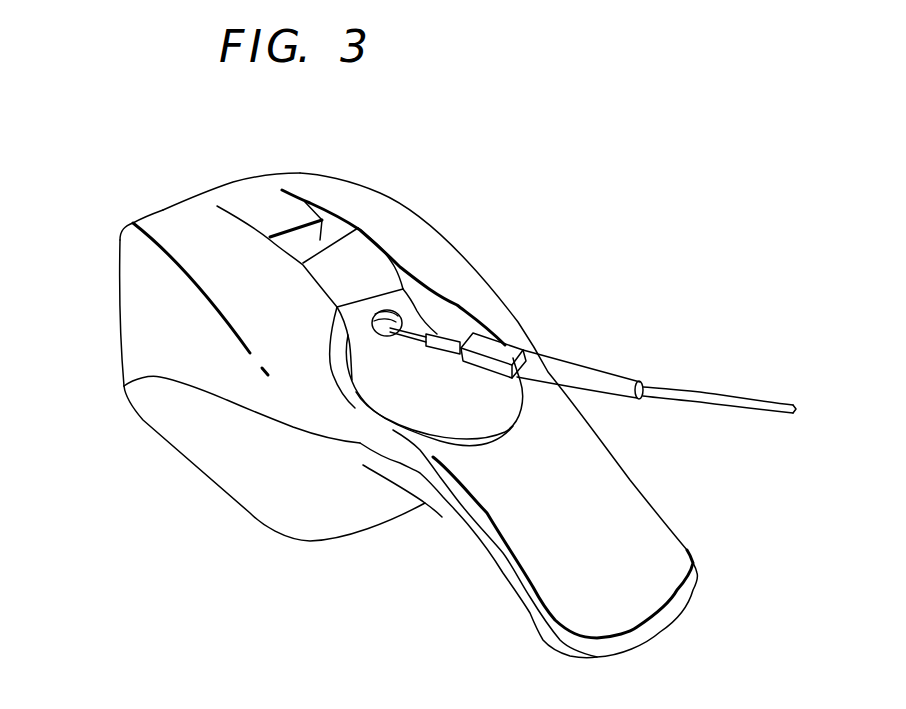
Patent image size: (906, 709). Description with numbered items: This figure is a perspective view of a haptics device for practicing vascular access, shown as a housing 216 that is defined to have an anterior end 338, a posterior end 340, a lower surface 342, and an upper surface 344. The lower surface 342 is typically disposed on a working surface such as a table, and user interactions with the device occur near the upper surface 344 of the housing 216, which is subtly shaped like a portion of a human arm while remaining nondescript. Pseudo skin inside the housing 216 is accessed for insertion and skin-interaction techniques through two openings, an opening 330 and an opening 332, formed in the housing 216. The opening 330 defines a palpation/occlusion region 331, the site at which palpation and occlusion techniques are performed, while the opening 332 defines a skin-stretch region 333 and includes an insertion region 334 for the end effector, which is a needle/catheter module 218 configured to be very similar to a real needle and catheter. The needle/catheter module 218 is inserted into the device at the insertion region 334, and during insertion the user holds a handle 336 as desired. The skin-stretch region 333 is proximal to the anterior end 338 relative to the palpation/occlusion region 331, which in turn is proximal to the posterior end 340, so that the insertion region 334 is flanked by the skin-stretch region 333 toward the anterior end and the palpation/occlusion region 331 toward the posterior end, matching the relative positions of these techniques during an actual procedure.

The housing 216 is at (403, 361).
The needle/catheter module 218 is at (510, 343).
The opening 330 is at (318, 202).
The palpation/occlusion region 331 is at (440, 186).
The opening 332 is at (440, 552).
The skin-stretch region 333 is at (493, 412).
The insertion region 334 is at (408, 318).
The handle 336 is at (663, 548).
The anterior end 338 is at (683, 620).
The posterior end 340 is at (128, 230).
The lower surface 342 is at (158, 442).
The upper surface 344 is at (207, 227).